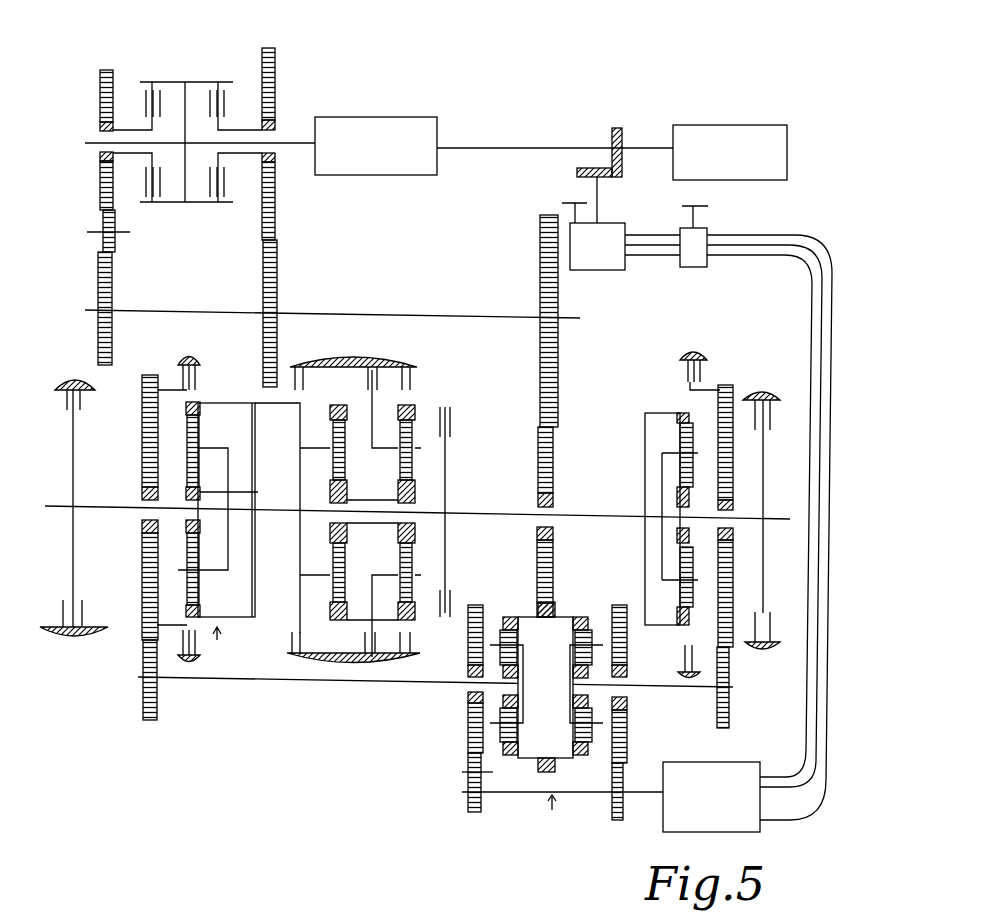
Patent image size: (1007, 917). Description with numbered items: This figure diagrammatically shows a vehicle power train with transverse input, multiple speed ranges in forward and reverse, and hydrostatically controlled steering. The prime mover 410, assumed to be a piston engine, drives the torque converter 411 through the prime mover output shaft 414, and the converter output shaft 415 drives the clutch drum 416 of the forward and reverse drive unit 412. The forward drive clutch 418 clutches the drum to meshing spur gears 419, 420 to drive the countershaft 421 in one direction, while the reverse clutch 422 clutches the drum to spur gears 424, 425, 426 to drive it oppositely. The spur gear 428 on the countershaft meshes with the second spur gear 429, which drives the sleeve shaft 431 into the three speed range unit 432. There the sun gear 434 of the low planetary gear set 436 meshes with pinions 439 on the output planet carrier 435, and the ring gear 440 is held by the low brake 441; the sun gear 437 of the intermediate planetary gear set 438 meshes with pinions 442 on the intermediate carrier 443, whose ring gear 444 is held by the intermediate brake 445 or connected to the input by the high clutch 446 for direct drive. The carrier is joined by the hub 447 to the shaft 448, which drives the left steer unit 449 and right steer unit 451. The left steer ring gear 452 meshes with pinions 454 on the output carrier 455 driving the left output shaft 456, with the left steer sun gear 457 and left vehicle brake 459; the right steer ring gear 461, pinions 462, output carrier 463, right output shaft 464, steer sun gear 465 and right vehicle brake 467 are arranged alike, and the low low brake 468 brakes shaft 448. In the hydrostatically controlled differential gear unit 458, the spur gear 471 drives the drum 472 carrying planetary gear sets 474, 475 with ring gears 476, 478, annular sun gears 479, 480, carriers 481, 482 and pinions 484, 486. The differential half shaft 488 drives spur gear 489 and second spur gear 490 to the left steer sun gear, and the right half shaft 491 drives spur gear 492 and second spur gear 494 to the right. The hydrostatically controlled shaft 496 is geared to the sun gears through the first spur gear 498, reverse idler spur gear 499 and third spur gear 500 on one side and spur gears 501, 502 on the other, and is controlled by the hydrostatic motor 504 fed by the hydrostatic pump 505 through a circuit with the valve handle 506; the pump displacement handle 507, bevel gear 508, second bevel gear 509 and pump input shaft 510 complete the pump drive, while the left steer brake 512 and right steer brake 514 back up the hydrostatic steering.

The prime mover 410 is at (770, 124).
The torque converter 411 is at (388, 116).
The forward and reverse drive unit 412 is at (188, 109).
The prime mover output shaft 414 is at (486, 147).
The converter output shaft 415 is at (282, 142).
The clutch drum 416 is at (150, 88).
The forward drive clutch 418 is at (226, 92).
The spur gear 419 is at (275, 212).
The spur gear 420 is at (277, 282).
The countershaft 421 is at (496, 317).
The reverse clutch 422 is at (125, 78).
The spur gear 424 is at (100, 180).
The spur gear 425 is at (103, 232).
The spur gear 426 is at (98, 300).
The spur gear 428 is at (558, 362).
The second spur gear 429 is at (553, 472).
The sleeve shaft 431 is at (500, 514).
The three speed range unit 432 is at (370, 676).
The sun gear 434 is at (374, 569).
The output planet carrier 435 is at (308, 445).
The low planetary gear set 436 is at (325, 434).
The sun gear 437 is at (415, 492).
The intermediate planetary gear set 438 is at (401, 437).
The pinions 439 is at (347, 496).
The ring gear 440 is at (376, 356).
The low brake 441 is at (380, 385).
The pinions 442 is at (468, 487).
The intermediate carrier 443 is at (376, 425).
The ring gear 444 is at (420, 410).
The intermediate brake 445 is at (412, 378).
The high clutch 446 is at (450, 428).
The hub 447 is at (296, 470).
The shaft 448 is at (282, 513).
The left steer unit 449 is at (219, 640).
The right steer unit 451 is at (652, 405).
The left steer ring gear 452 is at (192, 402).
The pinions 454 is at (175, 420).
The output carrier 455 is at (208, 446).
The left output shaft 456 is at (103, 506).
The left steer sun gear 457 is at (247, 493).
The hydrostatically controlled differential gear unit 458 is at (562, 820).
The left vehicle brake 459 is at (62, 393).
The right steer ring gear 461 is at (682, 413).
The pinions 462 is at (648, 496).
The output carrier 463 is at (672, 455).
The right output shaft 464 is at (775, 518).
The steer sun gear 465 is at (677, 536).
The right vehicle brake 467 is at (763, 392).
The low low brake 468 is at (210, 300).
The spur gear 471 is at (540, 600).
The drum 472 is at (561, 680).
The planetary gear set 474 is at (516, 640).
The planetary gear set 475 is at (571, 640).
The ring gear 476 is at (505, 613).
The ring gear 478 is at (572, 766).
The annular sun gear 479 is at (523, 690).
The annular sun gear 480 is at (572, 688).
The carrier 481 is at (505, 640).
The carrier 482 is at (572, 652).
The pinions 484 is at (470, 634).
The pinions 486 is at (592, 643).
The differential half shaft 488 is at (282, 680).
The spur gear 489 is at (140, 690).
The second spur gear 490 is at (140, 590).
The right half shaft 491 is at (694, 687).
The spur gear 492 is at (729, 692).
The second spur gear 494 is at (733, 572).
The hydrostatically controlled shaft 496 is at (600, 797).
The first spur gear 498 is at (470, 660).
The reverse idler spur gear 499 is at (481, 790).
The third spur gear 500 is at (468, 800).
The spur gear 501 is at (682, 662).
The spur gear 502 is at (628, 775).
The hydrostatic motor 504 is at (750, 762).
The hydrostatic pump 505 is at (612, 268).
The handle 506 is at (708, 206).
The handle 507 is at (573, 196).
The bevel gear 508 is at (624, 135).
The second bevel gear 509 is at (578, 167).
The pump input shaft 510 is at (600, 205).
The left steer brake 512 is at (188, 355).
The right steer brake 514 is at (705, 352).